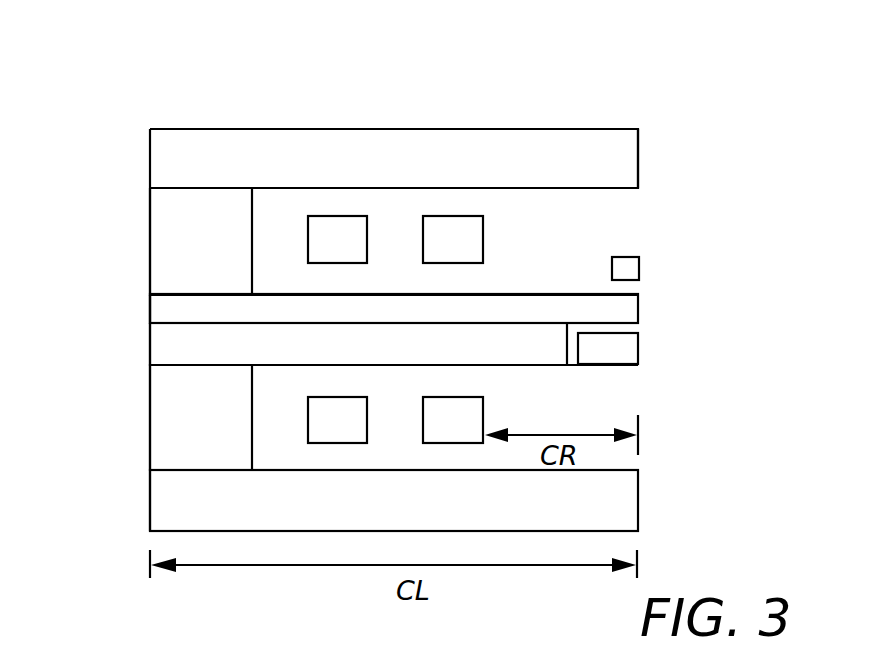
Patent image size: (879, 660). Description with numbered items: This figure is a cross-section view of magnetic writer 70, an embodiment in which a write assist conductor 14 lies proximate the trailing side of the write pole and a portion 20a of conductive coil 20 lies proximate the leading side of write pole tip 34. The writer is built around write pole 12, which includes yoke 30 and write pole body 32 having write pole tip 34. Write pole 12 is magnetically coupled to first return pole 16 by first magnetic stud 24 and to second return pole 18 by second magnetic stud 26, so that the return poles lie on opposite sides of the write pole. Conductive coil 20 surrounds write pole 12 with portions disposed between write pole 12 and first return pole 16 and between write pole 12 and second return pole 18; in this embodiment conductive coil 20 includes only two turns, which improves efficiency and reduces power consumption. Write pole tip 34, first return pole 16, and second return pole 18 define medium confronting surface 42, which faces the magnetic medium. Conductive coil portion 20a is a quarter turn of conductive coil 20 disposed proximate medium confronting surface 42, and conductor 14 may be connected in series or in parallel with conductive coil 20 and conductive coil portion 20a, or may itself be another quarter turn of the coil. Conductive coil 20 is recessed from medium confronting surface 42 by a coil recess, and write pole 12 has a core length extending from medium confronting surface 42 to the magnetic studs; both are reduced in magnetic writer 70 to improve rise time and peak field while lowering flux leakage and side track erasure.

The magnetic writer 70 is at (222, 100).
The write pole 12 is at (118, 323).
The second return pole 18 is at (158, 163).
The medium confronting surface 42 is at (665, 155).
The second magnetic stud 26 is at (160, 232).
The conductive coil 20 is at (508, 212).
The conductor 14 is at (640, 269).
The write pole body 32 is at (152, 308).
The write pole tip 34 is at (640, 309).
The yoke 30 is at (156, 353).
The conductive coil portion 20a is at (640, 350).
The first magnetic stud 24 is at (156, 443).
The first return pole 16 is at (156, 503).